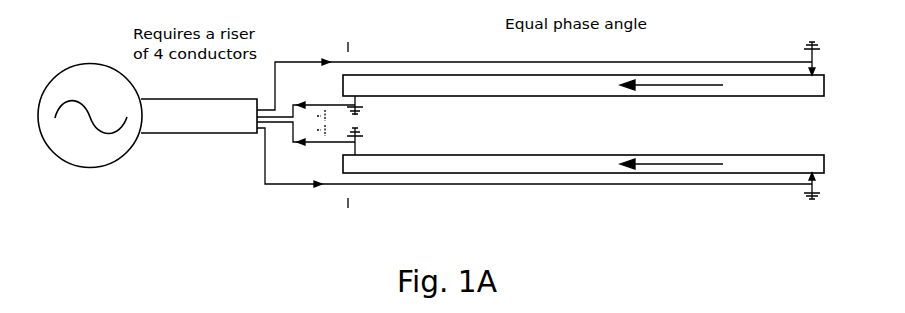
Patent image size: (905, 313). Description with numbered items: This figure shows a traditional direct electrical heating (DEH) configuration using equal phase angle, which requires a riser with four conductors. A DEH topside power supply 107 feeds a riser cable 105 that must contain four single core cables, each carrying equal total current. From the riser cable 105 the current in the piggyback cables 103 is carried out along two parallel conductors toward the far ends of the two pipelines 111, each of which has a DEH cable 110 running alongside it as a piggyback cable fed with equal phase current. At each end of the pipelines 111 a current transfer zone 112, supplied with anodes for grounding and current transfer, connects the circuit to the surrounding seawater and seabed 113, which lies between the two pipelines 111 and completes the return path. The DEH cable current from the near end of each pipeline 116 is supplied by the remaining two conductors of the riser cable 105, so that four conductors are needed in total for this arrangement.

The current in piggyback cable 103 is at (534, 126).
The riser cable 105 is at (199, 116).
The DEH topside power supply 107 is at (90, 99).
The DEH cable 110 is at (583, 126).
The pipeline 111 is at (646, 126).
The current transfer zone 112 is at (590, 124).
The seawater/seabed 113 is at (600, 118).
The DEH cable current from near end of pipeline 116 is at (318, 126).